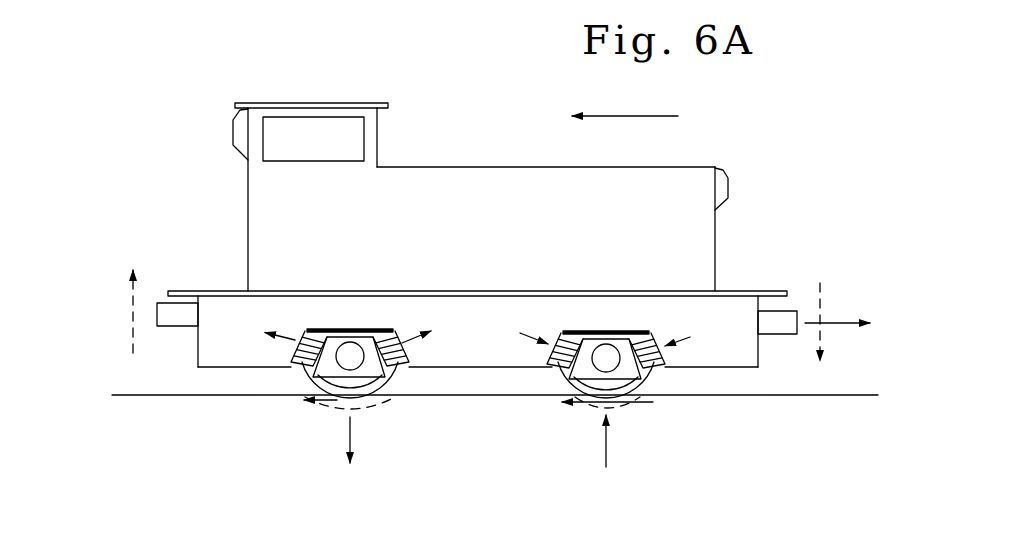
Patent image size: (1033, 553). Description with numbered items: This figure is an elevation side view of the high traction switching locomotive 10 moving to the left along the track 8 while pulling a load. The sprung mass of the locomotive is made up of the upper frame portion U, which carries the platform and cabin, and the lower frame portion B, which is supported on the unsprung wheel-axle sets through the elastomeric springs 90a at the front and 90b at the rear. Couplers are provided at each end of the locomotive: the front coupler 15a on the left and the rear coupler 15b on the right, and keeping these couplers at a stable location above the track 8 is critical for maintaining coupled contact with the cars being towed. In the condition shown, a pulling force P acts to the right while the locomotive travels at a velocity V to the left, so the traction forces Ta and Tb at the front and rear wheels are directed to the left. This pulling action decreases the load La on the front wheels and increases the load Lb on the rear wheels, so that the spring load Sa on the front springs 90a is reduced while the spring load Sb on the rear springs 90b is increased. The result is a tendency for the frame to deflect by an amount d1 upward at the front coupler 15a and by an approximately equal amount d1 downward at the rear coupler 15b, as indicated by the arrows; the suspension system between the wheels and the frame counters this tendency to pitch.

The high traction switching locomotive 10 is at (399, 174).
The track 8 is at (198, 393).
The front coupler 15a is at (183, 305).
The rear coupler 15b is at (770, 308).
The front elastomeric springs 90a is at (397, 367).
The rear elastomeric springs 90b is at (648, 370).
The lower frame portion B is at (711, 378).
The upper frame portion U is at (431, 160).
The velocity V is at (635, 131).
The pulling force P is at (837, 304).
The deflection d1 is at (464, 323).
The spring load on front springs Sa is at (324, 323).
The spring load on rear springs Sb is at (588, 325).
The front traction force Ta is at (299, 414).
The rear traction force Tb is at (587, 417).
The front wheel load La is at (369, 446).
The rear wheel load Lb is at (625, 446).